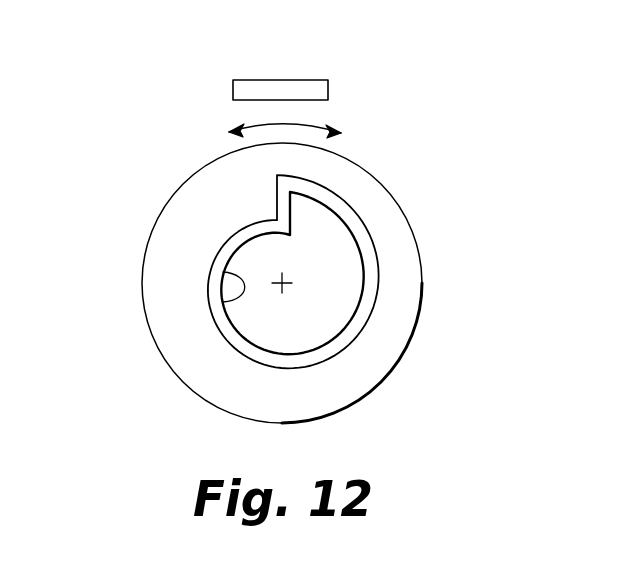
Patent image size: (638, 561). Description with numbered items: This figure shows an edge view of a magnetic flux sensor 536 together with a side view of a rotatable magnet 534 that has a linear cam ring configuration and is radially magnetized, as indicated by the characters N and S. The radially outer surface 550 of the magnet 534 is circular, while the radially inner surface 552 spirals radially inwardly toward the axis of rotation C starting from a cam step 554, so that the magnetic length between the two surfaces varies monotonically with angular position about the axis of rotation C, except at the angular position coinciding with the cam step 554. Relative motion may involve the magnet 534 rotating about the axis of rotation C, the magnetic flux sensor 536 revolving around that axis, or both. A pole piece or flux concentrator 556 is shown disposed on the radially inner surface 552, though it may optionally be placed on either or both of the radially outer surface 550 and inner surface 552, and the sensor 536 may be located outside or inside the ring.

The rotatable magnet 534 is at (358, 165).
The magnetic flux sensor 536 is at (287, 80).
The radially outer surface 550 is at (421, 287).
The radially inner surface 552 is at (362, 335).
The cam step 554 is at (278, 203).
The flux concentrator 556 is at (223, 272).
The axis of rotation C is at (282, 283).